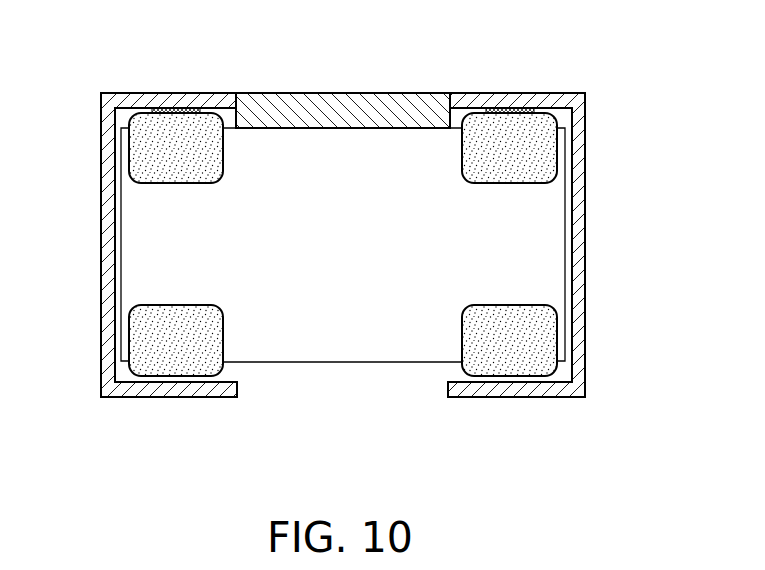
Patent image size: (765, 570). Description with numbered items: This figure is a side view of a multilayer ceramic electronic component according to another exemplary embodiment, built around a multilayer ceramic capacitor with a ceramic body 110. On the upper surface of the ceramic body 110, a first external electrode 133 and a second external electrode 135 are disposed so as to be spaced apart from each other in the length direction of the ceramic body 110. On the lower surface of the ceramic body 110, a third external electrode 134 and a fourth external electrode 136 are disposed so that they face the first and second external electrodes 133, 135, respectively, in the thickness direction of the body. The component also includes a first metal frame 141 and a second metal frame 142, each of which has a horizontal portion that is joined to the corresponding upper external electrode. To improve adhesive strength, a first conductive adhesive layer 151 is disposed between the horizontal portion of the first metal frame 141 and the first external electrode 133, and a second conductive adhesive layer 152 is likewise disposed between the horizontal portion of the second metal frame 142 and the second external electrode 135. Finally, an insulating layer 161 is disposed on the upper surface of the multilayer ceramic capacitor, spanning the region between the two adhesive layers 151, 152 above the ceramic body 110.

The ceramic body 110 is at (362, 347).
The first external electrode 133 is at (140, 157).
The third external electrode 134 is at (140, 340).
The second external electrode 135 is at (545, 157).
The fourth external electrode 136 is at (545, 341).
The first metal frame 141 is at (175, 397).
The second metal frame 142 is at (492, 397).
The first conductive adhesive layer 151 is at (170, 108).
The second conductive adhesive layer 152 is at (517, 108).
The insulating layer 161 is at (338, 103).